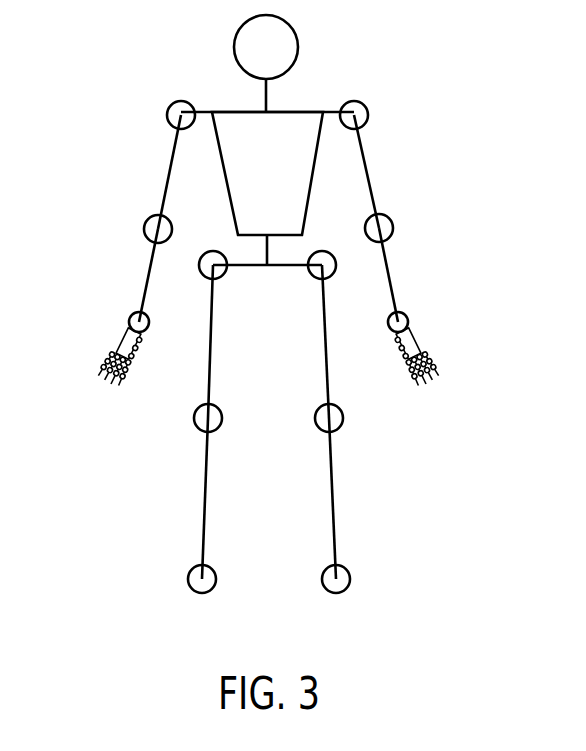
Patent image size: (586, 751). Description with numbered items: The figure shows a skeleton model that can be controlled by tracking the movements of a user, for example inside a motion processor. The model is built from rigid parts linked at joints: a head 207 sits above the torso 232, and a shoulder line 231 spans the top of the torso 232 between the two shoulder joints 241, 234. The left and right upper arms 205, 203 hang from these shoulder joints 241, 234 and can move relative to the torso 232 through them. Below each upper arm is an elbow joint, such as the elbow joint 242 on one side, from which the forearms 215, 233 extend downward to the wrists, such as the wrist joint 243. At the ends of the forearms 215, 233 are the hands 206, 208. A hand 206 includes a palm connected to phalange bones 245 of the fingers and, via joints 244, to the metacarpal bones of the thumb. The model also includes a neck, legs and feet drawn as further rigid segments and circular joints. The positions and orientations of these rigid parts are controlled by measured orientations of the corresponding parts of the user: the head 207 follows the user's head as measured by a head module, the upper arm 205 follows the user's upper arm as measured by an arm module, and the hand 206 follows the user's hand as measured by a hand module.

The head 207 is at (233, 52).
The shoulder line (clavicle) 231 is at (303, 112).
The torso 232 is at (228, 193).
The shoulder joint 241 is at (168, 117).
The shoulder joint 234 is at (368, 113).
The upper arm 205 is at (167, 182).
The upper arm 203 is at (371, 185).
The left elbow joint 242 is at (144, 231).
The forearm 215 is at (150, 264).
The forearm 233 is at (388, 268).
The left wrist joint 243 is at (146, 315).
The hand 206 is at (122, 340).
The hand 208 is at (415, 340).
The joints 244 is at (144, 338).
The phalange bones 245 is at (140, 362).